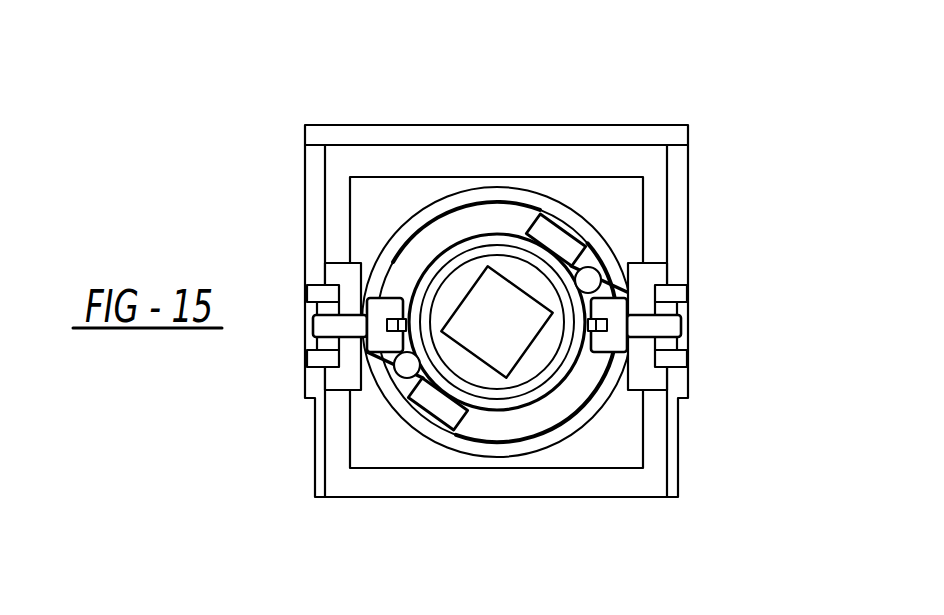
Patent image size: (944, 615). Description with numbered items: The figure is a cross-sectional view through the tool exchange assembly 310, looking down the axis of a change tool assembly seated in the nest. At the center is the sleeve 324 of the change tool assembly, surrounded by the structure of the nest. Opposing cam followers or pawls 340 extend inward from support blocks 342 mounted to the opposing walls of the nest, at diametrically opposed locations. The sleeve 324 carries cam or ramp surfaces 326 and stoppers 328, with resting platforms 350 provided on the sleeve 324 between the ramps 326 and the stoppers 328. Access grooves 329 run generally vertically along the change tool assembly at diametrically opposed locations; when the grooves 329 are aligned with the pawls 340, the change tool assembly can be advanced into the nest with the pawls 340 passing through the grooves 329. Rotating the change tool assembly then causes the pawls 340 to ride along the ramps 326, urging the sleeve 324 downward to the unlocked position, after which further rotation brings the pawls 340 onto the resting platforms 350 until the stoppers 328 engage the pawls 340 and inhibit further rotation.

The tool exchange assembly 310 is at (719, 66).
The sleeve 324 is at (552, 390).
The cam or ramp surfaces 326 is at (467, 223).
The stoppers 328 is at (592, 277).
The access grooves 329 is at (557, 237).
The cam followers or pawls 340 is at (375, 317).
The support blocks 342 is at (648, 378).
The resting platforms 350 is at (410, 268).